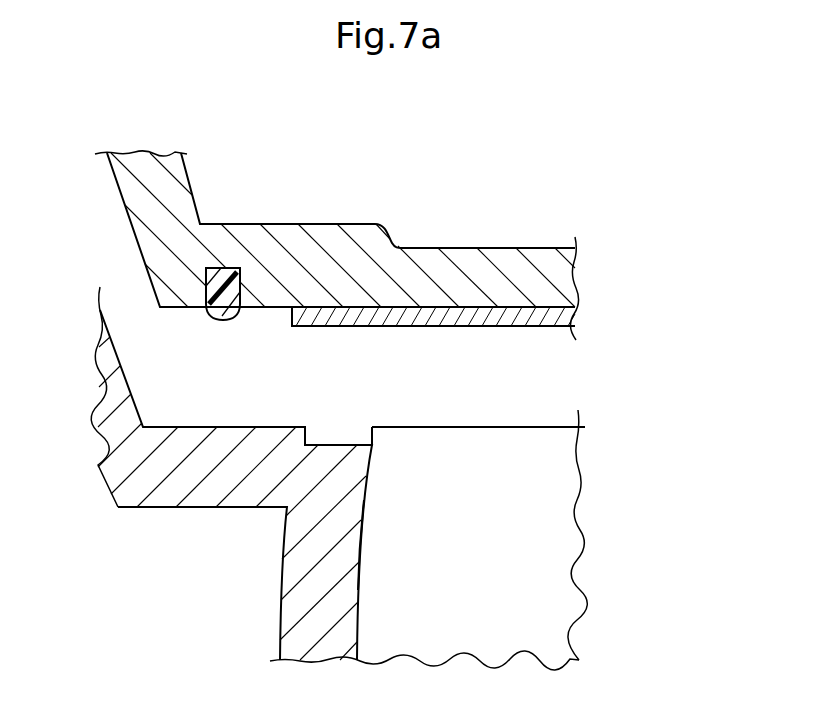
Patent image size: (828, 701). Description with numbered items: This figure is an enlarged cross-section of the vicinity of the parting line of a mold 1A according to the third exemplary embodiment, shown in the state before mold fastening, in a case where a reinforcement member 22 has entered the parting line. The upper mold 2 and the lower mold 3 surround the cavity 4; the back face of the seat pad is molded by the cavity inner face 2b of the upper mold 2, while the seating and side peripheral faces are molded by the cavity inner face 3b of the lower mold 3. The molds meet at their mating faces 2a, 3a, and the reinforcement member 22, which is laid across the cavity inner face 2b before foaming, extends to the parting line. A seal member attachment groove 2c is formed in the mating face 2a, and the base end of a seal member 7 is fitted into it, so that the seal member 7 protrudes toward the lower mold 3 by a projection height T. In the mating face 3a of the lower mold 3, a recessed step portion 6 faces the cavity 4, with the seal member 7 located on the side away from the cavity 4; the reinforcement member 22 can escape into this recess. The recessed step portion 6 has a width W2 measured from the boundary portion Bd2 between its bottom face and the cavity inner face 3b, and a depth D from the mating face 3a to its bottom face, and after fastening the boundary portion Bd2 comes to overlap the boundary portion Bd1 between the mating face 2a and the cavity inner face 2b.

The mold 1A is at (622, 200).
The upper mold 2 is at (510, 248).
The mating face 2a is at (268, 308).
The cavity inner face 2b is at (560, 318).
The seal member attachment groove 2c is at (226, 268).
The reinforcement member 22 is at (472, 326).
The lower mold 3 is at (280, 573).
The mating face 3a is at (205, 427).
The cavity inner face 3b is at (359, 548).
The cavity 4 is at (528, 509).
The recessed step portion 6 is at (335, 444).
The seal member 7 is at (221, 321).
The width of recessed step portion W2 is at (372, 428).
The depth of recessed step portion D is at (361, 455).
The projection height of seal member T is at (190, 288).
The boundary portion Bd1 is at (372, 172).
The boundary portion Bd2 is at (380, 166).